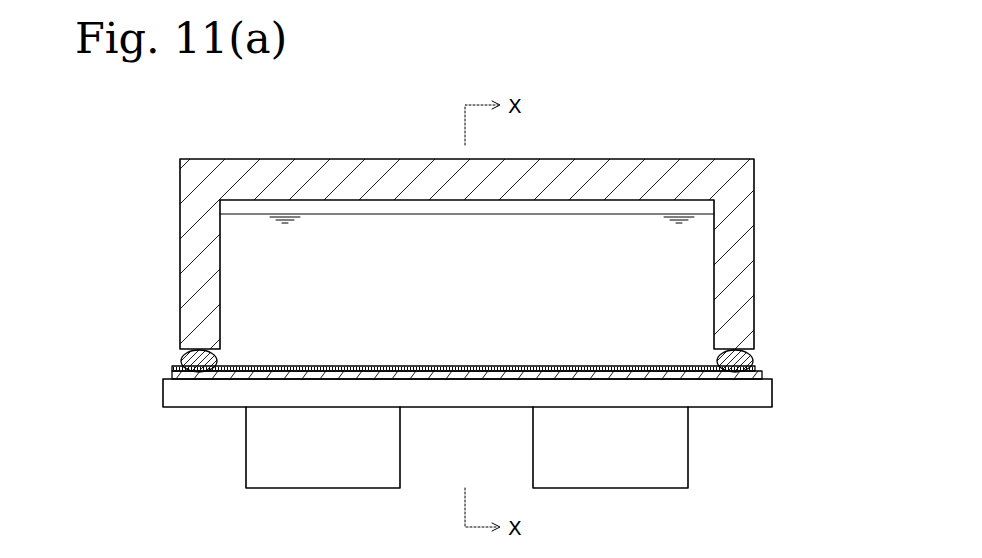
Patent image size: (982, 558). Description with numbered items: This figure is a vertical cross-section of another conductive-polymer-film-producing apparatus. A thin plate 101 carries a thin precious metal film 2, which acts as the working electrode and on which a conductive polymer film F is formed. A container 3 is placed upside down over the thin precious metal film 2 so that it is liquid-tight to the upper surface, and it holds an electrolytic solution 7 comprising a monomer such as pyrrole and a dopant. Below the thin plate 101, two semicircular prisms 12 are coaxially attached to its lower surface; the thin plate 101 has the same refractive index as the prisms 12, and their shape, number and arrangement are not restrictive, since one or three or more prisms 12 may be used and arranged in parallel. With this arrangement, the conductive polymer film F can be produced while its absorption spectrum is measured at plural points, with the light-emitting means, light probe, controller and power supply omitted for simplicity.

The container 3 is at (745, 195).
The electrolytic solution 7 is at (386, 258).
The thin precious metal film 2 is at (760, 375).
The conductive polymer film F is at (358, 365).
The thin plate 101 is at (775, 390).
The semicircular prism 12 is at (325, 480).